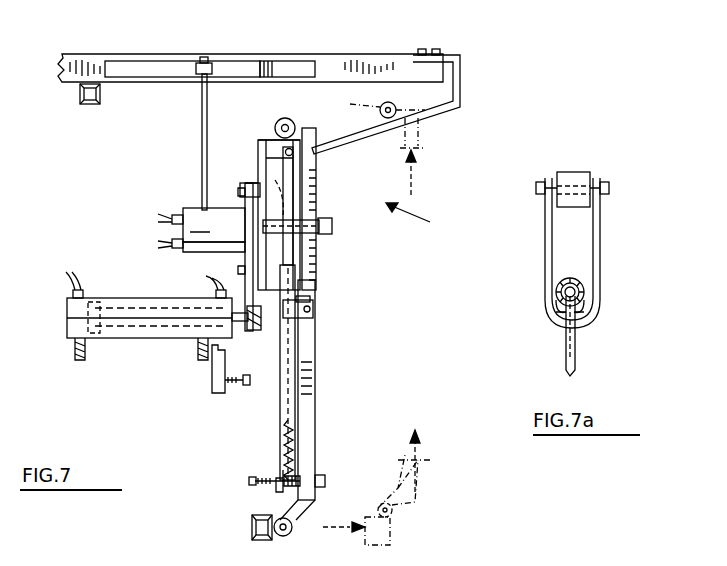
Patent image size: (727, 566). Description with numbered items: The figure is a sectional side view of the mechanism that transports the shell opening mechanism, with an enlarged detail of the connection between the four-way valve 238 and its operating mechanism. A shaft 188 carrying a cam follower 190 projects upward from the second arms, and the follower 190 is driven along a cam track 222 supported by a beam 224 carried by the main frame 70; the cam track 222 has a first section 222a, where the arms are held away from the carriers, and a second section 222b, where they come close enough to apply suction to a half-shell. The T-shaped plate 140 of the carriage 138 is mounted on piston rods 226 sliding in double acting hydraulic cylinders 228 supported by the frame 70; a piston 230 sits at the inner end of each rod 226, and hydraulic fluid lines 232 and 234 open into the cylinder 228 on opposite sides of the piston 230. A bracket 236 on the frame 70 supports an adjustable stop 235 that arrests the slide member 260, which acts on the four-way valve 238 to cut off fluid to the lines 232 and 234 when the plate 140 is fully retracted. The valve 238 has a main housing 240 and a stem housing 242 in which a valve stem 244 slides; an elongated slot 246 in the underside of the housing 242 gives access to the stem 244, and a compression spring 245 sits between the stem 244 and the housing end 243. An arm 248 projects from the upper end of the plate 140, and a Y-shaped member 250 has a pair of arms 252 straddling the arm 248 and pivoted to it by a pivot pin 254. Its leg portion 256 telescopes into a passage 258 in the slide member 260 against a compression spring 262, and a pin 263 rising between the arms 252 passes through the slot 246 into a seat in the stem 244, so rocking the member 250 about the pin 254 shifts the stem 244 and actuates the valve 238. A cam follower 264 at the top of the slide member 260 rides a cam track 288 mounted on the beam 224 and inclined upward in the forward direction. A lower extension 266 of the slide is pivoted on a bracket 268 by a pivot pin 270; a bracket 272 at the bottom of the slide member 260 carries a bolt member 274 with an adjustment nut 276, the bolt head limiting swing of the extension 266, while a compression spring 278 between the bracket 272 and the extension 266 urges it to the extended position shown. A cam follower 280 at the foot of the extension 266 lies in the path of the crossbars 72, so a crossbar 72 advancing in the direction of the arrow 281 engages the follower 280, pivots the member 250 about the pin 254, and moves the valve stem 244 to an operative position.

In FIG. 7, the main frame 70 is at (80, 96).
In FIG. 7, the crossbar 72 is at (252, 528).
In FIG. 7, the carriage 138 is at (435, 217).
In FIG. 7, the T-shaped plate 140 is at (250, 184).
In FIG. 7, the shaft 188 is at (202, 100).
In FIG. 7, the cam follower 190 is at (212, 68).
In FIG. 7, the cam track 222 is at (142, 58).
In FIG. 7, the first section of cam track 222a is at (184, 60).
In FIG. 7, the second section of cam track 222b is at (290, 62).
In FIG. 7, the beam 224 is at (94, 56).
In FIG. 7, the piston rod 226 is at (246, 332).
In FIG. 7, the double acting hydraulic cylinder 228 is at (126, 297).
In FIG. 7, the piston 230 is at (100, 340).
In FIG. 7, the hydraulic fluid line 232 is at (66, 288).
In FIG. 7, the hydraulic fluid line 234 is at (204, 282).
In FIG. 7, the adjustable stop 235 is at (245, 388).
In FIG. 7, the bracket 236 is at (212, 380).
In FIG. 7, the four-way valve 238 is at (170, 222).
In FIG. 7, the main housing 240 is at (185, 214).
In FIG. 7, the stem housing 242 is at (322, 210).
In FIG. 7a, the stem housing 242 is at (586, 292).
In FIG. 7, the housing end 243 is at (332, 226).
In FIG. 7, the valve stem 244 is at (262, 180).
In FIG. 7a, the valve stem 244 is at (574, 286).
In FIG. 7, the compression spring 245 is at (330, 213).
In FIG. 7a, the elongated slot 246 is at (556, 308).
In FIG. 7, the arm 248 is at (262, 150).
In FIG. 7a, the arm 248 is at (574, 172).
In FIG. 7, the Y-shaped member 250 is at (290, 248).
In FIG. 7a, the Y-shaped member 250 is at (578, 356).
In FIG. 7, the arms of Y-shaped member 252 is at (262, 142).
In FIG. 7a, the arms of Y-shaped member 252 is at (545, 274).
In FIG. 7, the pivot pin 254 is at (293, 154).
In FIG. 7, the leg portion 256 is at (300, 338).
In FIG. 7, the passage 258 is at (300, 356).
In FIG. 7, the slide member 260 is at (314, 392).
In FIG. 7, the compression spring 262 is at (340, 240).
In FIG. 7a, the pin 263 is at (580, 318).
In FIG. 7, the cam follower 264 is at (352, 104).
In FIG. 7, the lower extension 266 is at (316, 412).
In FIG. 7, the bracket 268 is at (300, 300).
In FIG. 7, the pivot pin 270 is at (312, 309).
In FIG. 7, the bracket 272 is at (252, 481).
In FIG. 7, the bolt member 274 is at (326, 478).
In FIG. 7, the adjustment nut 276 is at (278, 472).
In FIG. 7, the compression spring 278 is at (286, 486).
In FIG. 7, the cam follower 280 is at (288, 536).
In FIG. 7, the arrow 281 is at (348, 530).
In FIG. 7, the cam track 288 is at (440, 110).